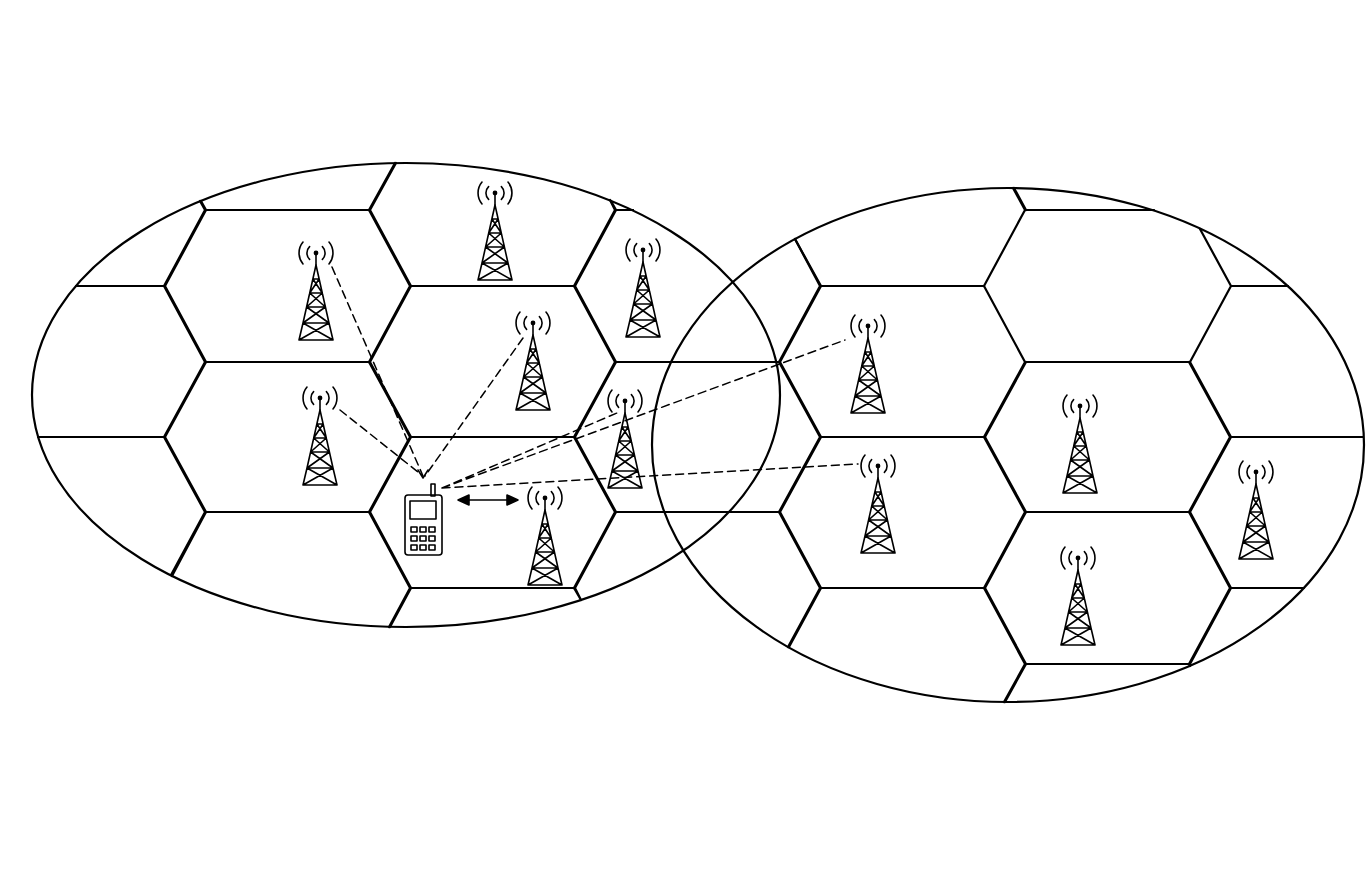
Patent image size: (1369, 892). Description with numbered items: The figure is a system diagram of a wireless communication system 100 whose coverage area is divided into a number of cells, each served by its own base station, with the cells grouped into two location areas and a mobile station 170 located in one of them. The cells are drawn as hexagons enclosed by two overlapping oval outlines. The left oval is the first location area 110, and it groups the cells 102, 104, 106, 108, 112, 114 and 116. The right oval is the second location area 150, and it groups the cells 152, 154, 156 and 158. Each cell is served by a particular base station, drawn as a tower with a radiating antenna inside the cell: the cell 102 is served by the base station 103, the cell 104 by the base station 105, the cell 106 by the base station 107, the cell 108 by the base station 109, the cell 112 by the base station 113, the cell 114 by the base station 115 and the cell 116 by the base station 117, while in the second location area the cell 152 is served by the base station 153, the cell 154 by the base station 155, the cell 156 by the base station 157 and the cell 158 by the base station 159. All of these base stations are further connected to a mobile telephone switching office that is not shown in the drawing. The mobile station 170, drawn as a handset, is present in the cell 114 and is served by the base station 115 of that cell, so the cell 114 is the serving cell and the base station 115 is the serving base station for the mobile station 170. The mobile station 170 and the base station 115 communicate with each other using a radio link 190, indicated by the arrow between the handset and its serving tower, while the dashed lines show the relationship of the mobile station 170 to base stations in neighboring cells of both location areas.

The wireless communication system 100 is at (1279, 108).
The first location area 110 is at (558, 182).
The second location area 150 is at (1122, 200).
The cell 102 is at (492, 224).
The cell 104 is at (287, 286).
The cell 106 is at (492, 361).
The cell 108 is at (697, 286).
The cell 112 is at (287, 437).
The cell 114 is at (492, 512).
The cell 116 is at (697, 438).
The base station 103 is at (487, 258).
The base station 105 is at (303, 325).
The base station 107 is at (540, 360).
The base station 109 is at (628, 318).
The base station 113 is at (308, 465).
The base station 115 is at (543, 520).
The base station 117 is at (634, 452).
The cell 152 is at (902, 361).
The cell 154 is at (902, 512).
The cell 156 is at (1107, 437).
The cell 158 is at (1107, 588).
The base station 153 is at (879, 385).
The base station 155 is at (891, 538).
The base station 157 is at (1088, 455).
The base station 159 is at (1087, 608).
The mobile station 170 is at (423, 555).
The radio link 190 is at (477, 500).